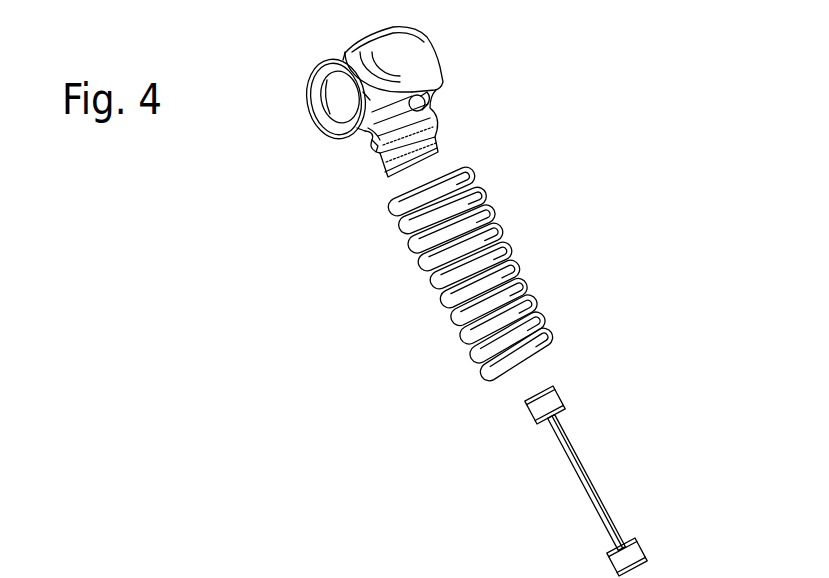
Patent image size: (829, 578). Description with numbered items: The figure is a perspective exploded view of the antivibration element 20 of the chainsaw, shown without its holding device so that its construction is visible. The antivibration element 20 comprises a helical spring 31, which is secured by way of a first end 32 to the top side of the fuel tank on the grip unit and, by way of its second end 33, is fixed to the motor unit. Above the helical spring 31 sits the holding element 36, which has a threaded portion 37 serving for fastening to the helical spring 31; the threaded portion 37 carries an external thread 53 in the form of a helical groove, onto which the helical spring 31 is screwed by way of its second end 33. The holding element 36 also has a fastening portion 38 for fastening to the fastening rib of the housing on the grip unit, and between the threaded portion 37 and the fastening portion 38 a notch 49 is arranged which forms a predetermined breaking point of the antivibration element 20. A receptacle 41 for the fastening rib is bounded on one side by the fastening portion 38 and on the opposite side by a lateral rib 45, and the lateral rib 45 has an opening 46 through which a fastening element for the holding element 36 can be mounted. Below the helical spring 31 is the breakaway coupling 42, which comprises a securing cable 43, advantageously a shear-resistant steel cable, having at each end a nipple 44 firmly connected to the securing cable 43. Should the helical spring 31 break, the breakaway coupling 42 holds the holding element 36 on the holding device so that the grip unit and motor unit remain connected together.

The antivibration element 20 is at (350, 340).
The helical spring 31 is at (503, 258).
The first end 32 is at (481, 392).
The second end 33 is at (383, 205).
The holding element 36 is at (455, 70).
The threaded portion 37 is at (412, 133).
The fastening portion 38 is at (413, 55).
The receptacle 41 is at (332, 53).
The breakaway coupling 42 is at (549, 505).
The securing cable 43 is at (586, 478).
The nipple 44 is at (550, 404).
The lateral rib 45 is at (318, 110).
The opening 46 is at (332, 133).
The notch 49 is at (425, 96).
The external thread 53 is at (372, 156).